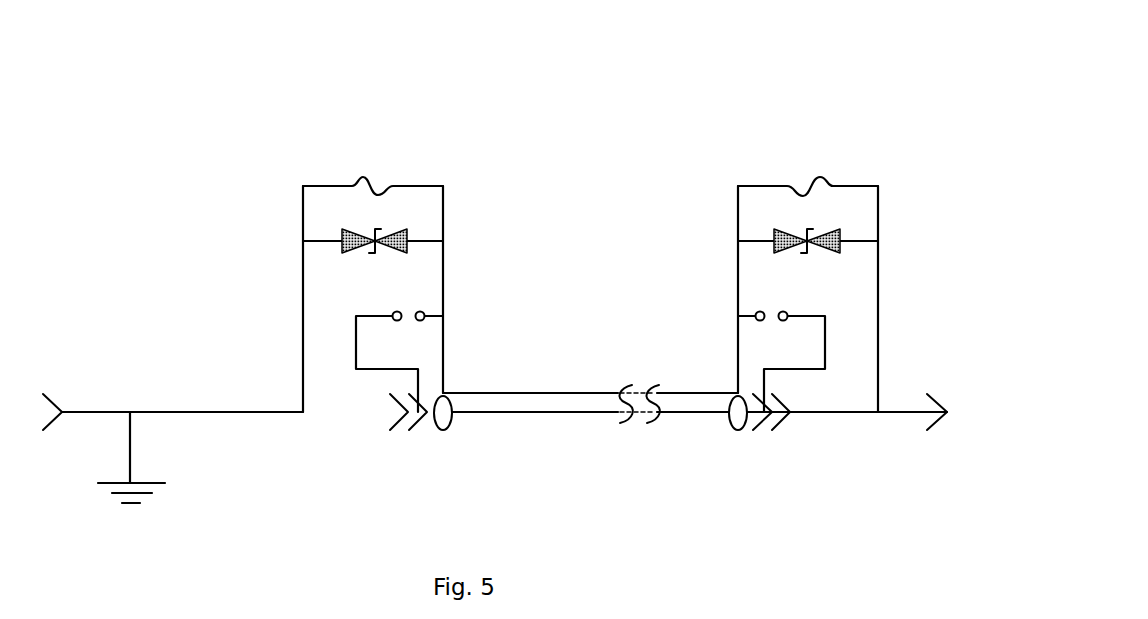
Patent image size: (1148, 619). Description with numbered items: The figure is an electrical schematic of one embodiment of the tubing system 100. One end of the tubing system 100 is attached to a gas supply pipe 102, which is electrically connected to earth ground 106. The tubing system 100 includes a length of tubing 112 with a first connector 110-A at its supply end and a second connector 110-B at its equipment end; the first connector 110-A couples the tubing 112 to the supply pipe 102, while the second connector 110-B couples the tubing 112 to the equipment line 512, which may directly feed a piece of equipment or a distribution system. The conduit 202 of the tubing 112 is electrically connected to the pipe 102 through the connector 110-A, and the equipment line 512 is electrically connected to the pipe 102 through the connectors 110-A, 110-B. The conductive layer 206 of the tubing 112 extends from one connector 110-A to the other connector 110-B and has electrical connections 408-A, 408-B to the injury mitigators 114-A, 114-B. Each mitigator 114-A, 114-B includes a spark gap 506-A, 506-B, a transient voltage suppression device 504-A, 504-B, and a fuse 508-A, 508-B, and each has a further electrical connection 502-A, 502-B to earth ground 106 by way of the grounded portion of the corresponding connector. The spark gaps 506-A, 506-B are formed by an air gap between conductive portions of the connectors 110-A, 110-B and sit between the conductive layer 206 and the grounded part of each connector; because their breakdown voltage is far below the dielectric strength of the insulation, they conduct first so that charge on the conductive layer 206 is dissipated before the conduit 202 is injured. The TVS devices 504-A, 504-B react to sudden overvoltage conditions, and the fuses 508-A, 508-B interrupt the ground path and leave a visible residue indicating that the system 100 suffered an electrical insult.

The tubing system 100 is at (882, 65).
The gas supply pipe 102 is at (153, 412).
The earth ground 106 is at (132, 465).
The first connector 110-A is at (409, 430).
The second connector 110-B is at (753, 430).
The tubing 112 is at (641, 474).
The injury mitigator 114-A is at (228, 153).
The injury mitigator 114-B is at (643, 153).
The conduit 202 is at (550, 414).
The conductive layer 206 is at (548, 393).
The electrical connection 408-A is at (443, 340).
The electrical connection 408-B is at (738, 362).
The electrical connection 502-A is at (303, 372).
The electrical connection 502-B is at (878, 372).
The transient voltage suppression device 504-A is at (407, 240).
The transient voltage suppression device 504-B is at (774, 240).
The spark gap 506-A is at (421, 311).
The spark gap 506-B is at (758, 312).
The fuse 508-A is at (362, 178).
The fuse 508-B is at (820, 178).
The equipment line 512 is at (842, 412).